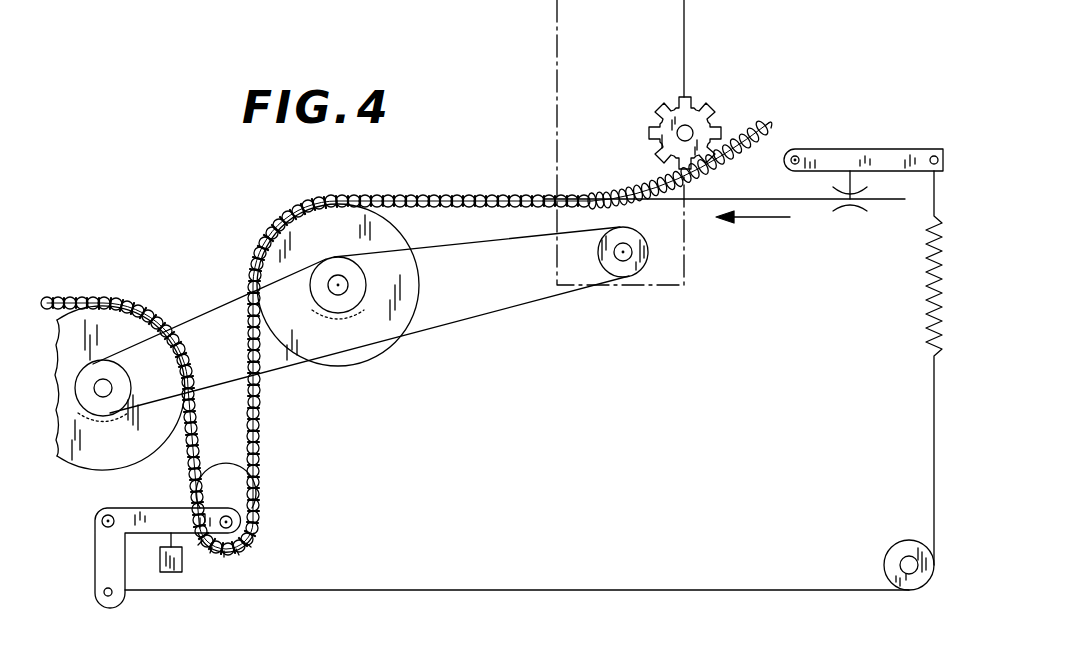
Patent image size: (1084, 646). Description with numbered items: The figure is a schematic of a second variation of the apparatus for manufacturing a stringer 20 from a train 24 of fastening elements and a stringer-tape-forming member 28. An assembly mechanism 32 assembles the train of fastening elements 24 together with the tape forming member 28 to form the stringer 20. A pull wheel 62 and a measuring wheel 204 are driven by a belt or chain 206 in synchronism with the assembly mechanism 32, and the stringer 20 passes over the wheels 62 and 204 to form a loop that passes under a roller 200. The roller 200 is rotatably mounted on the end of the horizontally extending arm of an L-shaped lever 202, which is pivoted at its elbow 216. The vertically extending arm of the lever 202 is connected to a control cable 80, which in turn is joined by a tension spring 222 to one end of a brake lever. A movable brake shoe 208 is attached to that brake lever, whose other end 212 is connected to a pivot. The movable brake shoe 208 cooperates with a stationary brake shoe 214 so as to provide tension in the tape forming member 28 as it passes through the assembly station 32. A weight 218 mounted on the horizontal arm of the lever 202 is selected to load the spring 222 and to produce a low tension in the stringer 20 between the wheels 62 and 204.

The stringer 20 is at (440, 196).
The train of fastening elements 24 is at (772, 123).
The stringer-tape-forming member 28 is at (793, 203).
The assembly mechanism 32 is at (716, 88).
The pull wheel 62 is at (371, 353).
The control cable 80 is at (592, 589).
The roller 200 is at (257, 528).
The L-shaped lever 202 is at (148, 522).
The measuring wheel 204 is at (125, 328).
The belt or chain 206 is at (484, 317).
The movable brake shoe 208 is at (864, 194).
The other end of lever 212 is at (798, 157).
The stationary brake shoe 214 is at (851, 209).
The elbow 216 is at (887, 159).
The weight 218 is at (183, 566).
The tension spring 222 is at (930, 320).